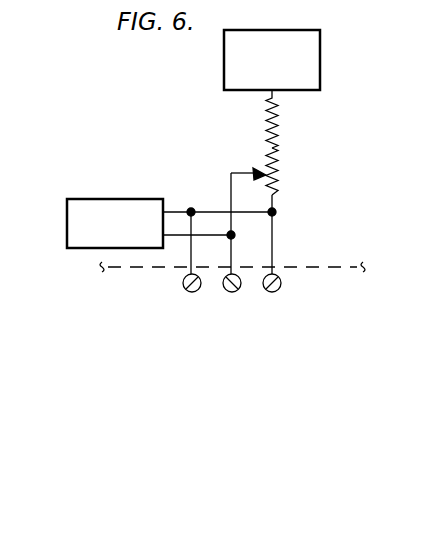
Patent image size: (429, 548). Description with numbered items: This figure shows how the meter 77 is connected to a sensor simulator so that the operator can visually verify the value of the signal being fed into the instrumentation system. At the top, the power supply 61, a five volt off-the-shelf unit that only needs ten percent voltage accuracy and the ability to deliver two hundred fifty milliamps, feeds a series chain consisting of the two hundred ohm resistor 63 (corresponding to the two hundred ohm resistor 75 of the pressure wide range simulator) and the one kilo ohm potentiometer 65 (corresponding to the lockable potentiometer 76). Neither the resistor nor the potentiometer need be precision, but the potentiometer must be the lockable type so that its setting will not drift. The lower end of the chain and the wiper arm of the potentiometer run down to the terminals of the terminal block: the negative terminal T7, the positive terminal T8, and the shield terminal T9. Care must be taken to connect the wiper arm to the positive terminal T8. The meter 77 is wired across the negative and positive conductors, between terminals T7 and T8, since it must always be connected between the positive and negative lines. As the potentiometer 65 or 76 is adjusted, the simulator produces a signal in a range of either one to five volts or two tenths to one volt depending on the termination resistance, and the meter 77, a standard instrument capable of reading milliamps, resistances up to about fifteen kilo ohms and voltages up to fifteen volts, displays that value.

The power supply 61 is at (318, 53).
The 200 ohm resistor 63 is at (315, 119).
The 200 ohm resistor 75 is at (279, 104).
The 1 kilo ohm potentiometer 65 is at (293, 176).
The 1 kilo ohm lockable potentiometer 76 is at (279, 184).
The meter 77 is at (110, 200).
The terminal T7 is at (187, 312).
The terminal T8 is at (233, 312).
The terminal T9 is at (279, 312).